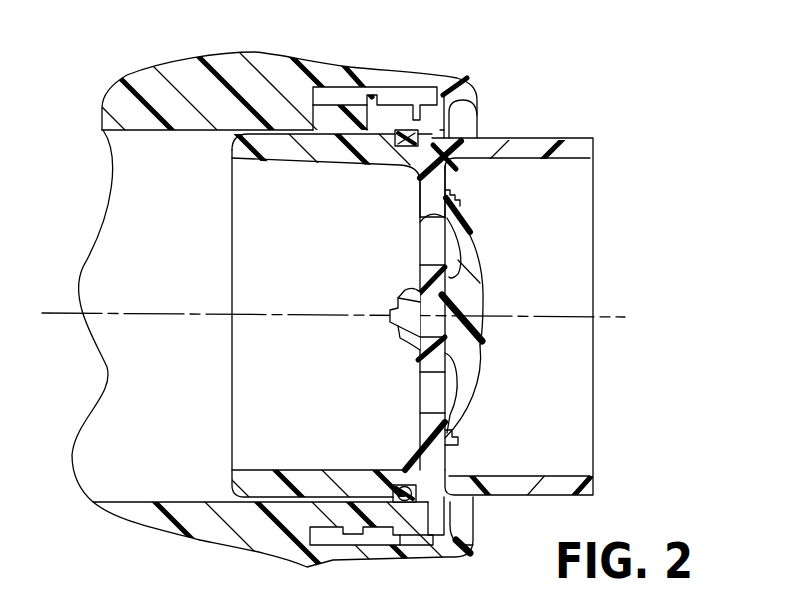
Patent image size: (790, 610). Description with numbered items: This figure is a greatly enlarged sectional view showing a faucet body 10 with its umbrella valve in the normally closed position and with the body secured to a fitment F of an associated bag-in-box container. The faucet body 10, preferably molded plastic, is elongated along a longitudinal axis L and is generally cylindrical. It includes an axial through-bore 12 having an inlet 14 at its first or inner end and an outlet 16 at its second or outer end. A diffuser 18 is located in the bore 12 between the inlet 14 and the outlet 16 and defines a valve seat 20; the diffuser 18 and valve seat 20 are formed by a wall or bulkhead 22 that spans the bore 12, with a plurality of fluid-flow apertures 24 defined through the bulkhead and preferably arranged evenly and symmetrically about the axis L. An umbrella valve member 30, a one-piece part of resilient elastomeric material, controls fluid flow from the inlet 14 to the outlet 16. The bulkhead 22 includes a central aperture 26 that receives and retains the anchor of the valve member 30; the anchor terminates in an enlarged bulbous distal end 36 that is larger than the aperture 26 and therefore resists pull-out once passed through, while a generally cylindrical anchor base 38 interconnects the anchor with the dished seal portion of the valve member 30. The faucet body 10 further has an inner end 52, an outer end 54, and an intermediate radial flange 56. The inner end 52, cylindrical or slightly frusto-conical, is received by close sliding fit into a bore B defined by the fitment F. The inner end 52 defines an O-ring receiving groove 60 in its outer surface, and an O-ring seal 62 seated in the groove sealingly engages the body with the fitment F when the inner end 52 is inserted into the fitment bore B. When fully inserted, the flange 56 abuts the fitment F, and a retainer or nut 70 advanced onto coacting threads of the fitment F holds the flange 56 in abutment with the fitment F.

The faucet body 10 is at (519, 105).
The axial through-bore 12 is at (566, 183).
The inlet 14 is at (262, 226).
The outlet 16 is at (567, 240).
The diffuser 18 is at (406, 352).
The valve seat 20 is at (451, 182).
The bulkhead 22 is at (419, 197).
The fluid-flow apertures 24 is at (420, 243).
The central aperture 26 is at (415, 326).
The umbrella valve member 30 is at (494, 291).
The bulbous distal end 36 is at (394, 331).
The anchor base 38 is at (446, 278).
The inner end 52 is at (229, 367).
The outer end 54 is at (592, 483).
The intermediate radial flange 56 is at (470, 506).
The O-ring receiving groove 60 is at (362, 117).
The O-ring seal 62 is at (411, 128).
The nut 70 is at (464, 72).
The fitment F is at (146, 62).
The fitment bore B is at (146, 131).
The longitudinal axis L is at (616, 320).